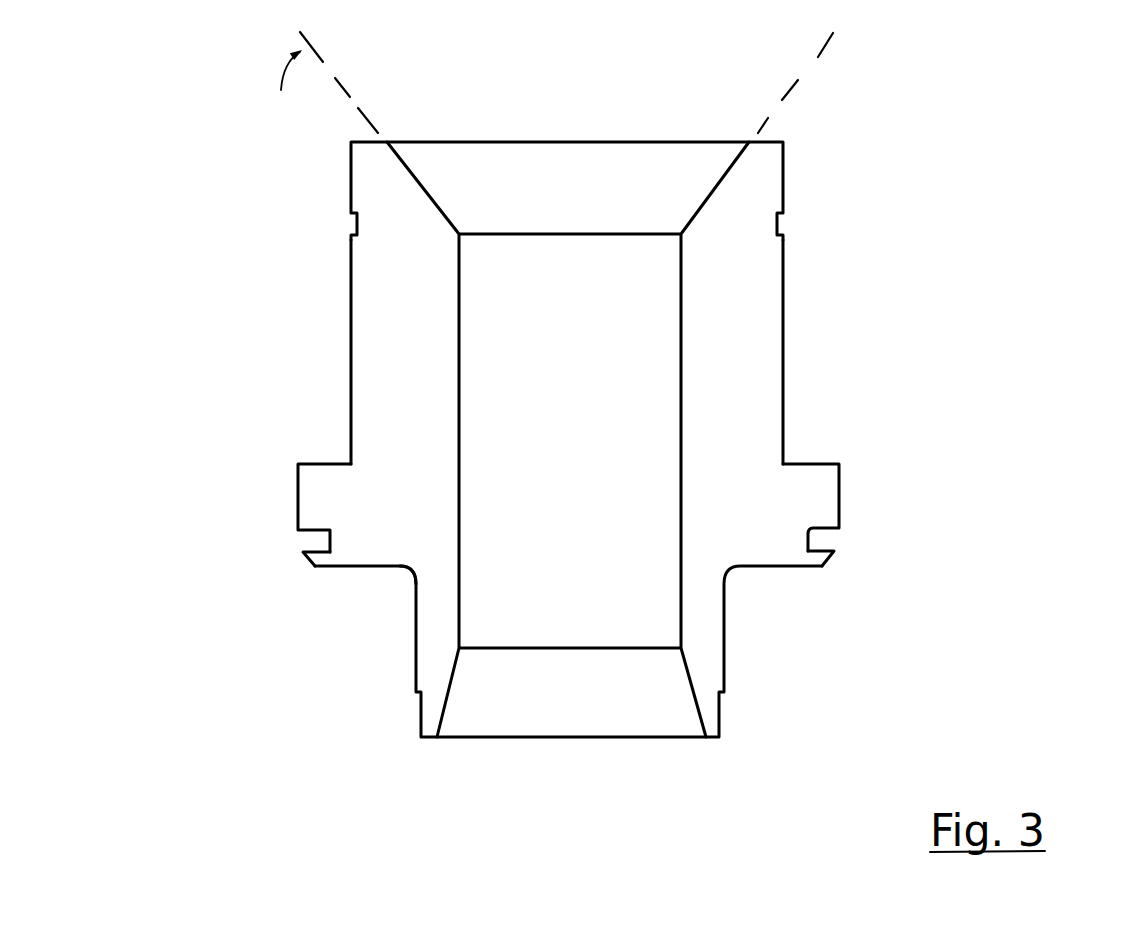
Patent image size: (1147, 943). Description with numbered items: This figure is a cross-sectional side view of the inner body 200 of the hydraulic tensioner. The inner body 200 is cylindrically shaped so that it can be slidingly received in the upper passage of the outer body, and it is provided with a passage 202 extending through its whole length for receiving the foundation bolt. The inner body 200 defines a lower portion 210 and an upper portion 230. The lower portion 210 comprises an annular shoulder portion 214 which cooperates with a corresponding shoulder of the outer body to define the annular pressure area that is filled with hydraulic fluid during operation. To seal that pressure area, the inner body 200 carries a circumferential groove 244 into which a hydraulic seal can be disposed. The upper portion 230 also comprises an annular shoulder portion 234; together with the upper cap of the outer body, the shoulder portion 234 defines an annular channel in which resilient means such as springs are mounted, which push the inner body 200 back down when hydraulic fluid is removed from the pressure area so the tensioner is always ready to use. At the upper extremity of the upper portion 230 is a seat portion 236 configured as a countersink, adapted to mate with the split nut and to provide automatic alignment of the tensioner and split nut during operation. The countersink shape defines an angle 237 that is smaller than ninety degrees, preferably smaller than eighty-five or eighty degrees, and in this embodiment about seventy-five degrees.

The inner body 200 is at (970, 246).
The passage 202 is at (597, 467).
The lower portion 210 is at (855, 523).
The annular shoulder portion 214 is at (379, 568).
The upper portion 230 is at (867, 513).
The annular shoulder portion 234 is at (332, 463).
The seat portion 236 is at (343, 128).
The angle 237 is at (836, 48).
The circumferential groove 244 is at (310, 546).